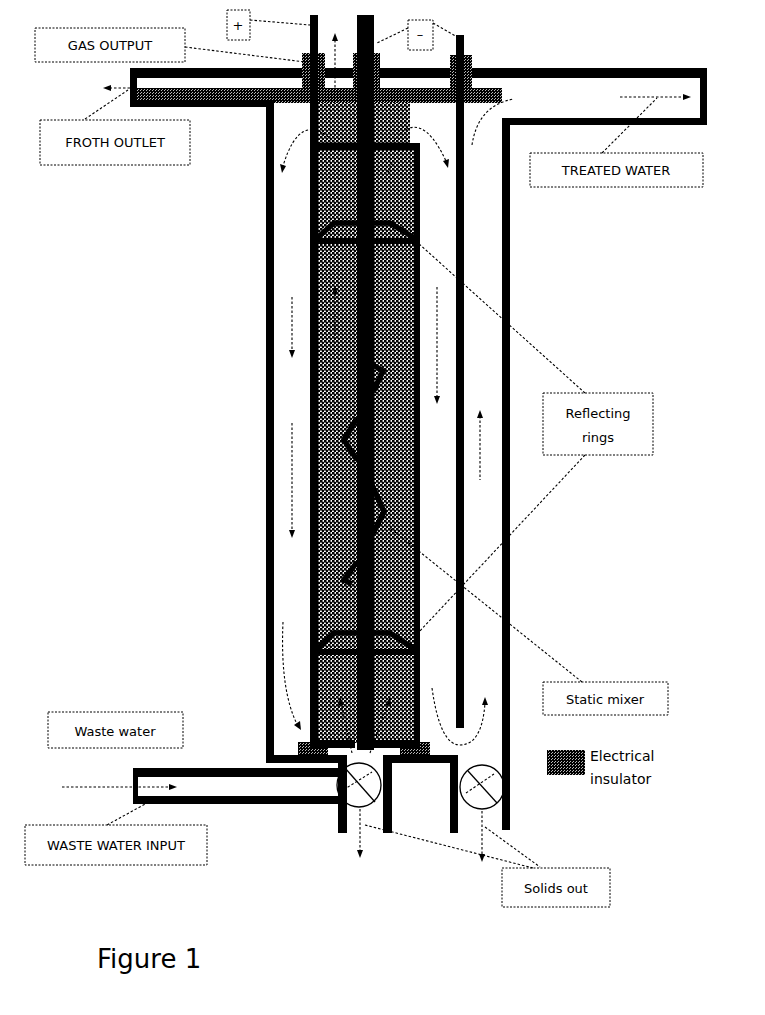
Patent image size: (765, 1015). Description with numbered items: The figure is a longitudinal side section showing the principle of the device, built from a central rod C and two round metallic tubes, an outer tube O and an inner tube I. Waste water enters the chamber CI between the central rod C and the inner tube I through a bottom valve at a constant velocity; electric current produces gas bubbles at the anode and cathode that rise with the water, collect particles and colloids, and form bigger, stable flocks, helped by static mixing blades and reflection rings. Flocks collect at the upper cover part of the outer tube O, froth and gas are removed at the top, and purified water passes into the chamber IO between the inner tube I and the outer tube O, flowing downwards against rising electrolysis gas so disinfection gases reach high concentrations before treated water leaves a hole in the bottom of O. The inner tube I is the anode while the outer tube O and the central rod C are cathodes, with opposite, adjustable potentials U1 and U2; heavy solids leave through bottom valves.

The central rod C is at (357, 187).
The inner tube I is at (310, 218).
The adjustable electric potential U1 is at (357, 270).
The adjustable electric potential U2 is at (312, 373).
The outer tube O is at (266, 400).
The chamber between inner and outer tubes IO is at (300, 431).
The chamber between central rod and inner tube CI is at (323, 478).